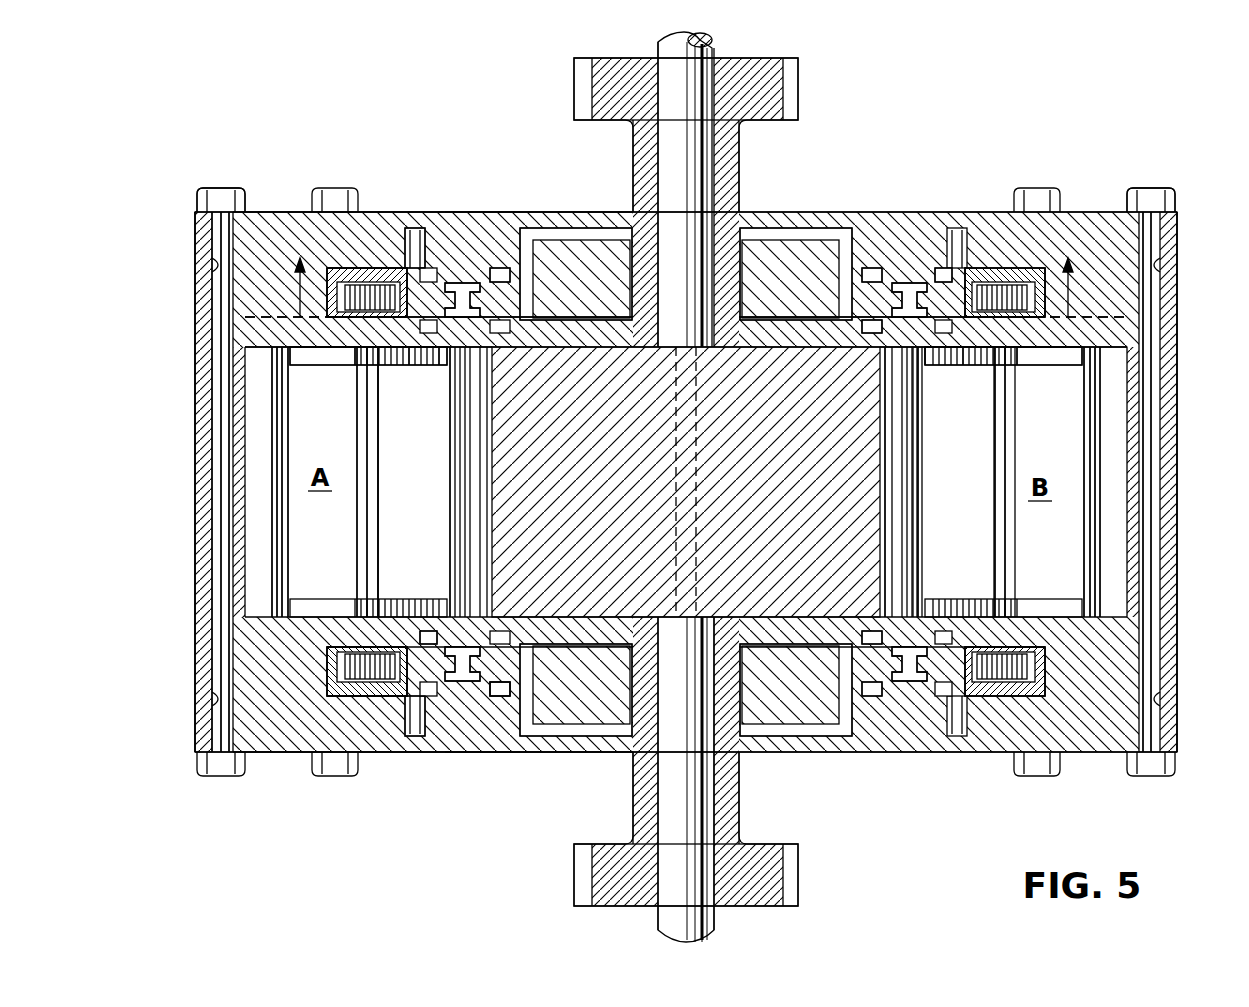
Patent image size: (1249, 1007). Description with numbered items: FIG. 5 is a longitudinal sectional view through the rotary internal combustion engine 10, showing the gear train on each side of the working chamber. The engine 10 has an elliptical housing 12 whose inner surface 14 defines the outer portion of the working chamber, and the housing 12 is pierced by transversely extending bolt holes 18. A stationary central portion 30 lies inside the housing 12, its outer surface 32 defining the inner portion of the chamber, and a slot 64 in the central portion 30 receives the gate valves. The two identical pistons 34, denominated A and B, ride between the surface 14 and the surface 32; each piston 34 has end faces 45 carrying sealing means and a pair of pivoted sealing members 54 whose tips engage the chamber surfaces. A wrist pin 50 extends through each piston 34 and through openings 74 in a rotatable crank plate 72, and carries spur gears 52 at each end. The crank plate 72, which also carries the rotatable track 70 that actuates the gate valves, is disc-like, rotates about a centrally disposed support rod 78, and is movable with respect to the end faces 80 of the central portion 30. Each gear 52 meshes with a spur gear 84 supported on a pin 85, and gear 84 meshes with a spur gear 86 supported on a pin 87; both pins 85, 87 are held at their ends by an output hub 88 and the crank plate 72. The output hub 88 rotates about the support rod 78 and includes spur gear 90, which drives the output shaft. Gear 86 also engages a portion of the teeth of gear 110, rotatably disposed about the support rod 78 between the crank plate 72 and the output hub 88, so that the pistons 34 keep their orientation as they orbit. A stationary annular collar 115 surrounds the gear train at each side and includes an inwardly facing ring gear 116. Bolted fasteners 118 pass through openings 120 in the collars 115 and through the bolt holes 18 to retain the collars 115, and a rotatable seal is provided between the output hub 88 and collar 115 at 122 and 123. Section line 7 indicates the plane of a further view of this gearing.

The section line 7- 7 is at (687, 301).
The internal combustion engine 10 is at (900, 758).
The housing 12 is at (1178, 492).
The inner surface 14 is at (248, 428).
The bolt holes 18 is at (220, 478).
The central portion 30 is at (572, 481).
The outer surface 32 is at (880, 512).
The pistons 34 is at (397, 491).
The end faces 45 is at (335, 366).
The wrist pin 50 is at (372, 445).
The spur gears 52 is at (368, 283).
The pivoted sealing members 54 is at (285, 531).
The slot 64 is at (703, 545).
The rotatable track 70 is at (595, 340).
The crank plate 72 is at (445, 350).
The openings 74 is at (410, 366).
The support rod 78 is at (668, 152).
The end faces 80 is at (800, 340).
The spur gear 84 is at (445, 290).
The pin 85 is at (943, 268).
The spur gear 86 is at (498, 268).
The pin 87 is at (873, 268).
The output hub 88 is at (815, 212).
The spur gear 90 is at (592, 78).
The gear 110 is at (612, 240).
The collar 115 is at (290, 222).
The ring gear 116 is at (413, 228).
The bolted fasteners 118 is at (1042, 198).
The openings 120 is at (215, 262).
The rotatable seal 122 is at (455, 214).
The rotatable seal 123 is at (345, 268).